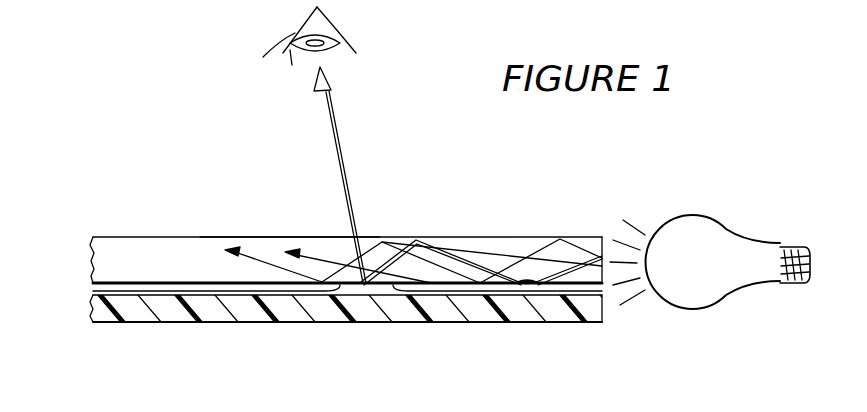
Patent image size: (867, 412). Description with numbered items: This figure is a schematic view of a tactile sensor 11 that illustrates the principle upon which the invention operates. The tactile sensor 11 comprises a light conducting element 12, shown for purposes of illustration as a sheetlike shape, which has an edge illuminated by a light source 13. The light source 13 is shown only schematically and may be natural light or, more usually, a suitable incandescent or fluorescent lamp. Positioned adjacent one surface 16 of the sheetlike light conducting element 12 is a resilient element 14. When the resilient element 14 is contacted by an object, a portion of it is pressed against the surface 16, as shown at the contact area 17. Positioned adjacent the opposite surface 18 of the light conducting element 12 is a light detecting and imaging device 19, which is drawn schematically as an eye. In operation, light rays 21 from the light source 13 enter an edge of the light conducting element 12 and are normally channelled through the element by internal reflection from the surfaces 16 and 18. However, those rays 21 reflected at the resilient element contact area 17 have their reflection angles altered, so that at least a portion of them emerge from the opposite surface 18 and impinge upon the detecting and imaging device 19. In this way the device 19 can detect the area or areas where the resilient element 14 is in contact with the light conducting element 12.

The tactile sensor 11 is at (484, 229).
The light conducting element 12 is at (187, 257).
The light source 13 is at (718, 224).
The resilient element 14 is at (523, 322).
The surface 16 is at (102, 288).
The contact area 17 is at (381, 289).
The opposite surface 18 is at (290, 237).
The light detecting and imaging device 19 is at (333, 40).
The light rays 21 is at (431, 283).